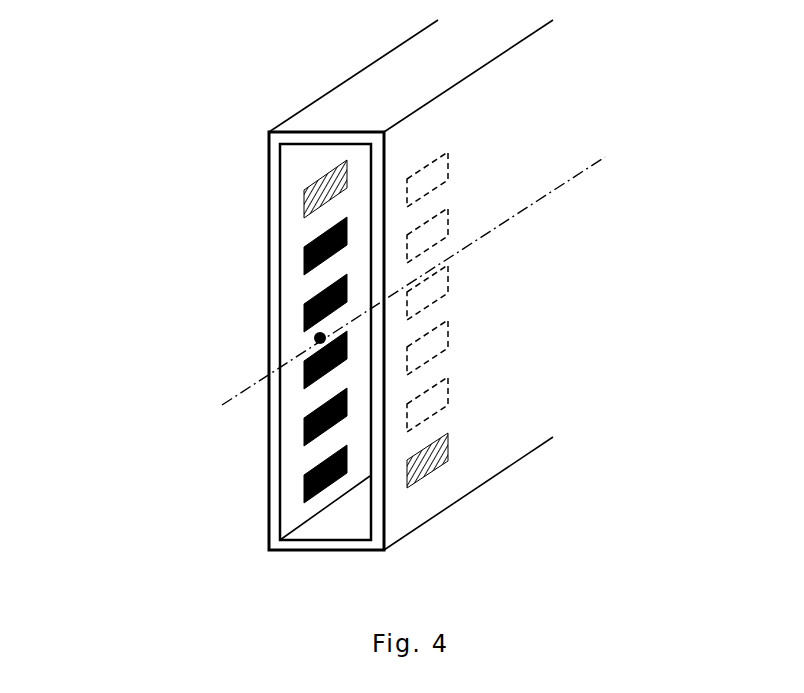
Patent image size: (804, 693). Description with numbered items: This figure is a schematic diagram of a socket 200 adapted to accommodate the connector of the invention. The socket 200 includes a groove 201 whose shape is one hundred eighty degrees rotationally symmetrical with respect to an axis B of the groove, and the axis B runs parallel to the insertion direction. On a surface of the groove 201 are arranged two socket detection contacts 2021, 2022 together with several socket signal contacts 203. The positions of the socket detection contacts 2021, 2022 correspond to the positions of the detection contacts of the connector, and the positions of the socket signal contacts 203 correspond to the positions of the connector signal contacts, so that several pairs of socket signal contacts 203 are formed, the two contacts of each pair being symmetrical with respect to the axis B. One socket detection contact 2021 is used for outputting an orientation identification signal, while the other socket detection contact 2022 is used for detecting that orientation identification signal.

The socket 200 is at (93, 67).
The groove 201 is at (233, 118).
The socket detection contact 2022 is at (303, 198).
The socket signal contacts 203 is at (304, 255).
The socket detection contact 2021 is at (448, 450).
The axis of the groove B is at (401, 293).